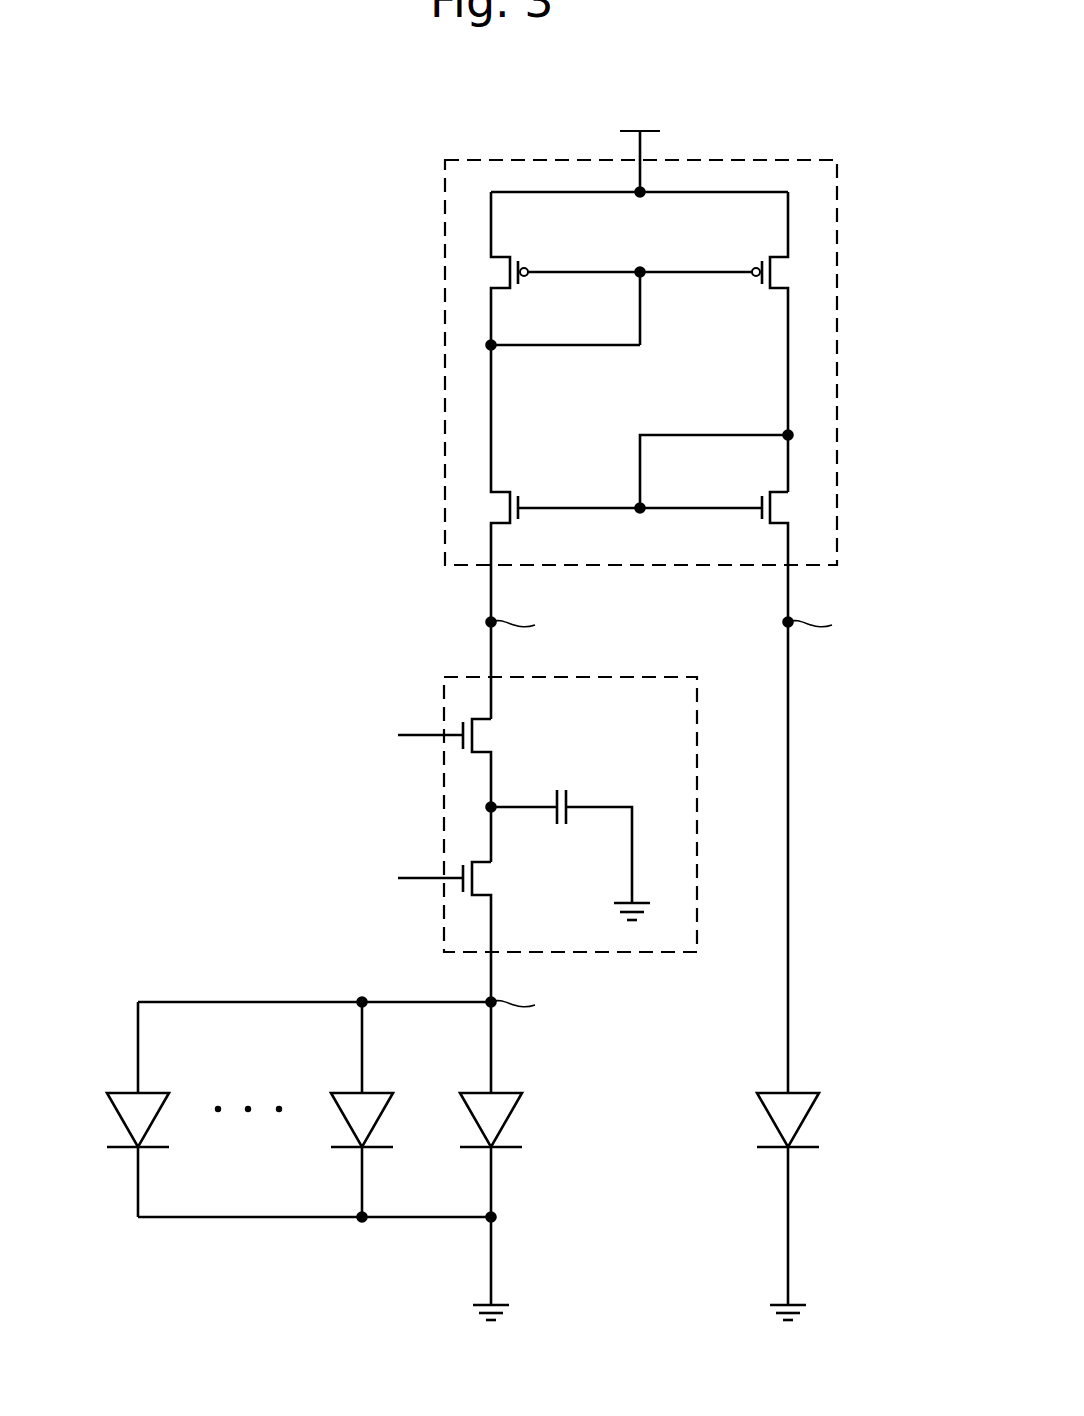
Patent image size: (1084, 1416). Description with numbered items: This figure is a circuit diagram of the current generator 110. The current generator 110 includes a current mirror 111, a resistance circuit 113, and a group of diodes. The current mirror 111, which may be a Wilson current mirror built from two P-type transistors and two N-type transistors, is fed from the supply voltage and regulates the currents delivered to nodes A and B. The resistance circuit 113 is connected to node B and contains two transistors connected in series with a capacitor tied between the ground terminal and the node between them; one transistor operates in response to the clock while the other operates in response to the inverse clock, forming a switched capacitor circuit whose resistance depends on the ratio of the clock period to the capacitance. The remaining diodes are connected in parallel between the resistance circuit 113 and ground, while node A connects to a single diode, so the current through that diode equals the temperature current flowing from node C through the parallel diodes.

The current generator 110 is at (910, 87).
The current mirror 111 is at (778, 160).
The resistance circuit 113 is at (640, 677).